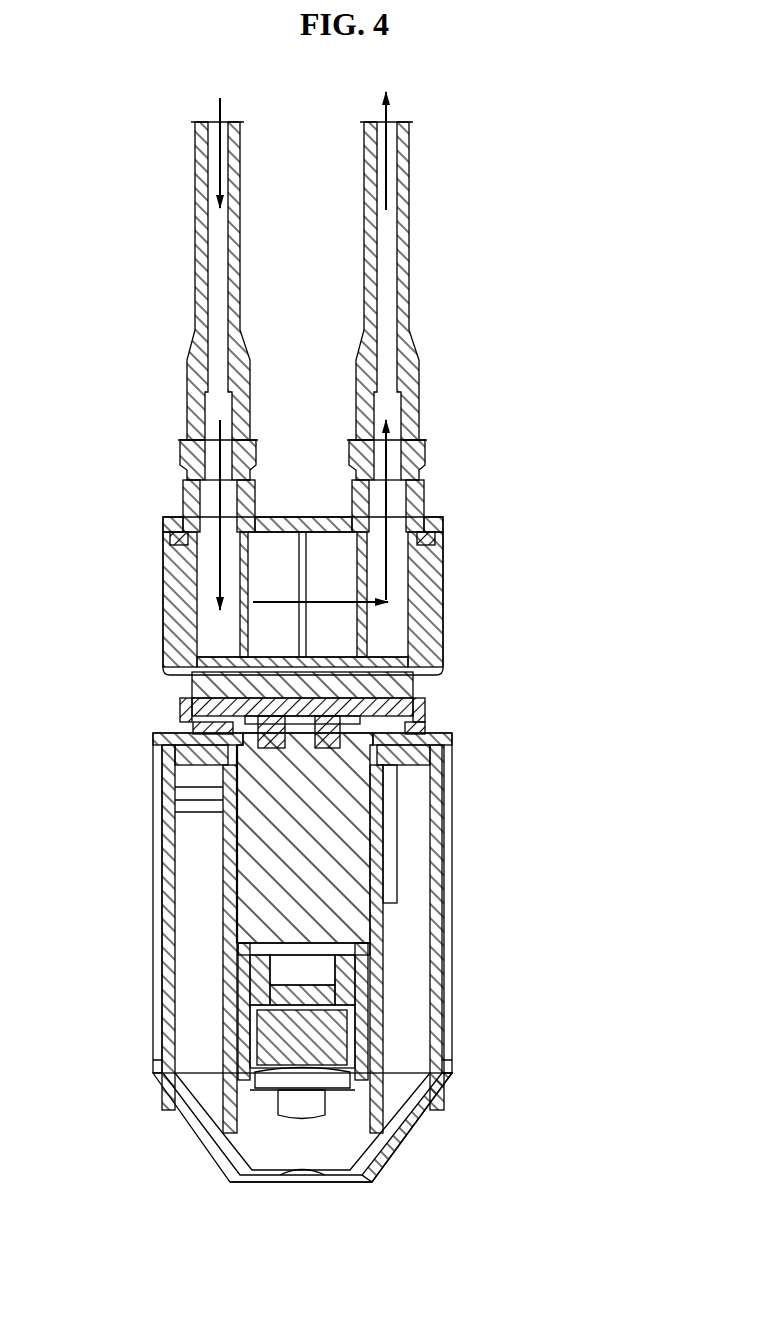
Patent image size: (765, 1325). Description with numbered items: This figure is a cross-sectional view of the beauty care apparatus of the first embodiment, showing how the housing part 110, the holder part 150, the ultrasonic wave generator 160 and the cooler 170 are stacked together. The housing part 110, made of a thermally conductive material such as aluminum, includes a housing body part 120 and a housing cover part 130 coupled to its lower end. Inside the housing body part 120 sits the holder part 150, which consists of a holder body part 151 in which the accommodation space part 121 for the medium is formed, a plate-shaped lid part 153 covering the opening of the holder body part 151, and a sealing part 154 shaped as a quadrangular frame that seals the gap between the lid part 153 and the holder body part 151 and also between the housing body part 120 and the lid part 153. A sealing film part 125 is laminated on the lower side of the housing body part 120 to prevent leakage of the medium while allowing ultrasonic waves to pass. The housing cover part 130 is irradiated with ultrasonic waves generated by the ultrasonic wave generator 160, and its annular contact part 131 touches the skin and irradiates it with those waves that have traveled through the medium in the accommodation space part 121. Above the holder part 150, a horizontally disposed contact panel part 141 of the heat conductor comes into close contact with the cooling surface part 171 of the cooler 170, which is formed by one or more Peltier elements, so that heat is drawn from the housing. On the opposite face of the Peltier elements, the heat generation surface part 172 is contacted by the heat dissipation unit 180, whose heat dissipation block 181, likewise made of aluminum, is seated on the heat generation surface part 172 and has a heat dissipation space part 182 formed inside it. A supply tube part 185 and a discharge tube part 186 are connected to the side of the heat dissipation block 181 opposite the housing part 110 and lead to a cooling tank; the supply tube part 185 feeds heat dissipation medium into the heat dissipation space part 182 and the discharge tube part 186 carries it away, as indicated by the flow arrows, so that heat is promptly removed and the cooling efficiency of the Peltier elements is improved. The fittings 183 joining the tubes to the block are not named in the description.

The housing part 110 is at (524, 920).
The housing body part 120 is at (460, 880).
The accommodation space part 121 is at (420, 980).
The sealing film part 125 is at (300, 1185).
The housing cover part 130 is at (456, 1100).
The contact part 131 is at (370, 1185).
The contact panel part 141 is at (418, 710).
The holder part 150 is at (242, 812).
The holder body part 151 is at (290, 888).
The lid part 153 is at (430, 727).
The sealing part 154 is at (418, 758).
The ultrasonic wave generator 160 is at (355, 1047).
The cooler 170 is at (205, 682).
The cooling surface part 171 is at (205, 716).
The heat generation surface part 172 is at (238, 655).
The heat dissipation unit 180 is at (452, 552).
The heat dissipation block 181 is at (177, 580).
The heat dissipation space part 182 is at (278, 557).
The fitting 183 is at (240, 625).
The supply tube part 185 is at (205, 268).
The discharge tube part 186 is at (410, 278).